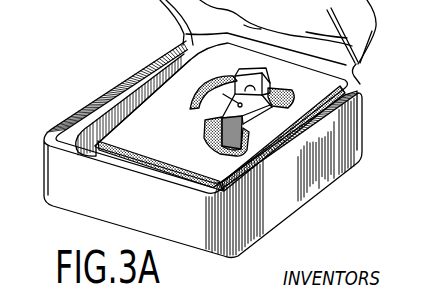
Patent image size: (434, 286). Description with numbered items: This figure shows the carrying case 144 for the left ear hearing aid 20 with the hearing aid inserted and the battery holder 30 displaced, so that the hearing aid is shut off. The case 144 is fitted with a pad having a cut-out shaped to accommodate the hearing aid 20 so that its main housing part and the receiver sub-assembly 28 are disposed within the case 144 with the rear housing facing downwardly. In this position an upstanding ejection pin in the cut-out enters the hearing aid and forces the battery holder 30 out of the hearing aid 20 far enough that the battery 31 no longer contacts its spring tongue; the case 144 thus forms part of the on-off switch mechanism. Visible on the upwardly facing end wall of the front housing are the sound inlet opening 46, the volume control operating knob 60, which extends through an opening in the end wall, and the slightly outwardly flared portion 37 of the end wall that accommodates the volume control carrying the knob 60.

The carrying case 144 is at (313, 203).
The receiver sub-assembly 28 is at (282, 117).
The flared portion of end wall 37 is at (222, 94).
The hearing aid instrument 20 is at (223, 112).
The battery holder 30 is at (273, 64).
The battery 31 is at (271, 97).
The sound inlet opening 46 is at (239, 108).
The volume control operating knob 60 is at (221, 92).